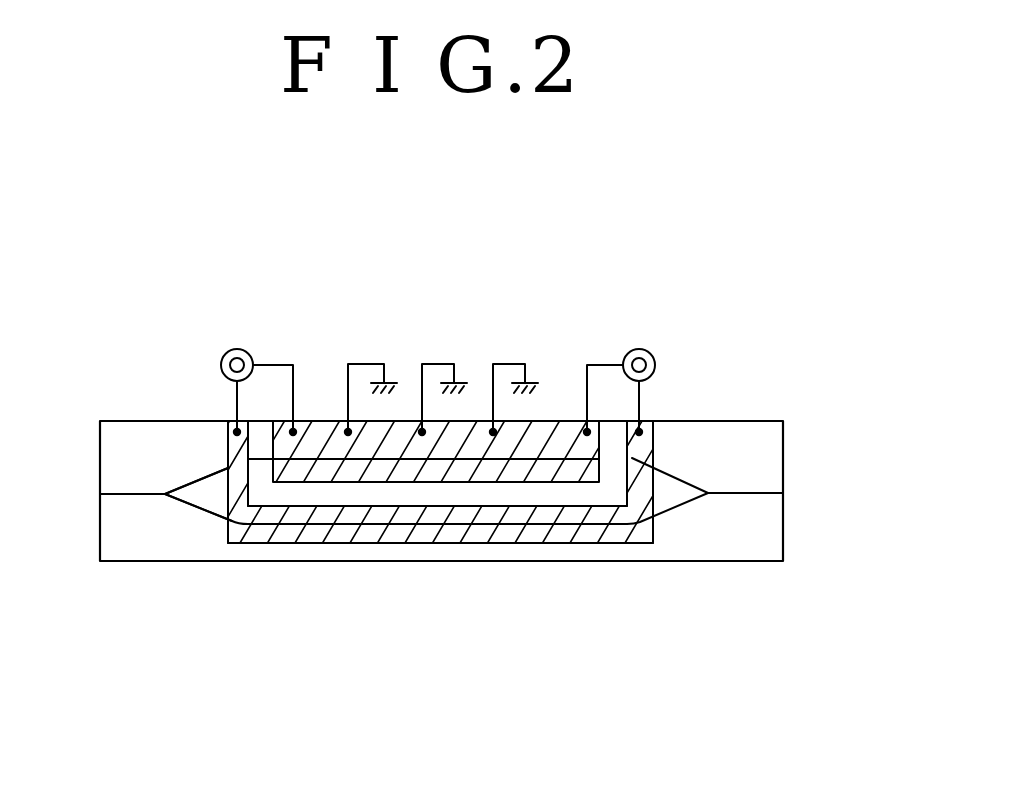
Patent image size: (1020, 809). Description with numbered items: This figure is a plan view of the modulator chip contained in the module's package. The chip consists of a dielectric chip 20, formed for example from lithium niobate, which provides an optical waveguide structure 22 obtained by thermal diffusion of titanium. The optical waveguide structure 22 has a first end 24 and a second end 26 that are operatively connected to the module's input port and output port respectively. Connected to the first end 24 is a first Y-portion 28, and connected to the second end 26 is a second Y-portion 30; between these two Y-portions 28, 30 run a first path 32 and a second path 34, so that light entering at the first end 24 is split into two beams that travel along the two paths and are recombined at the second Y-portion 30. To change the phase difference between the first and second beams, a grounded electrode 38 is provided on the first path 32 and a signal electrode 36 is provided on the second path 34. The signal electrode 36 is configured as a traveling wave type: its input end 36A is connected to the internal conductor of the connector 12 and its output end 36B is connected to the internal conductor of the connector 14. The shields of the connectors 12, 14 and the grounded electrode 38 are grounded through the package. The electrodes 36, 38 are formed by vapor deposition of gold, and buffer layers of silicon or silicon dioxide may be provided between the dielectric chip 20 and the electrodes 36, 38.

The connector 12 is at (247, 350).
The connector 14 is at (628, 352).
The dielectric chip 20 is at (715, 420).
The optical waveguide structure 22 is at (118, 486).
The first end 24 is at (100, 494).
The second end 26 is at (790, 493).
The first Y-portion 28 is at (165, 494).
The second Y-portion 30 is at (708, 495).
The first path 32 is at (200, 477).
The second path 34 is at (205, 515).
The signal electrode 36 is at (451, 540).
The input end 36A is at (230, 428).
The output end 36B is at (653, 420).
The grounded electrode 38 is at (470, 420).